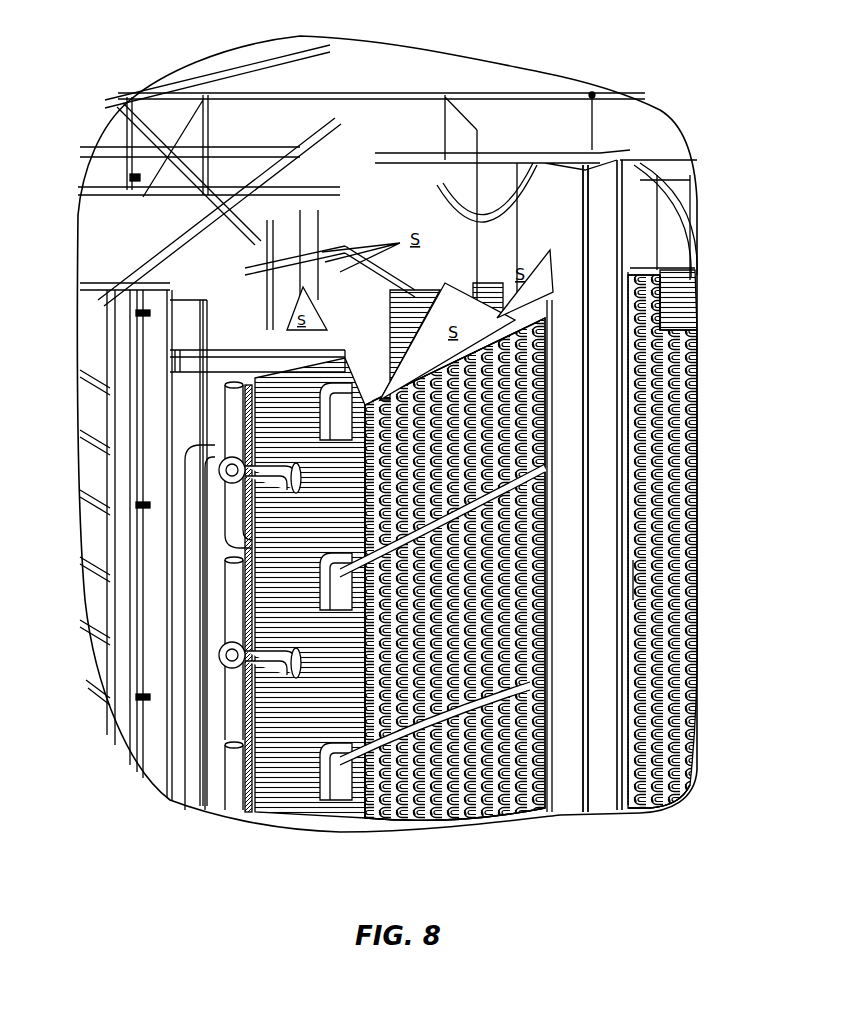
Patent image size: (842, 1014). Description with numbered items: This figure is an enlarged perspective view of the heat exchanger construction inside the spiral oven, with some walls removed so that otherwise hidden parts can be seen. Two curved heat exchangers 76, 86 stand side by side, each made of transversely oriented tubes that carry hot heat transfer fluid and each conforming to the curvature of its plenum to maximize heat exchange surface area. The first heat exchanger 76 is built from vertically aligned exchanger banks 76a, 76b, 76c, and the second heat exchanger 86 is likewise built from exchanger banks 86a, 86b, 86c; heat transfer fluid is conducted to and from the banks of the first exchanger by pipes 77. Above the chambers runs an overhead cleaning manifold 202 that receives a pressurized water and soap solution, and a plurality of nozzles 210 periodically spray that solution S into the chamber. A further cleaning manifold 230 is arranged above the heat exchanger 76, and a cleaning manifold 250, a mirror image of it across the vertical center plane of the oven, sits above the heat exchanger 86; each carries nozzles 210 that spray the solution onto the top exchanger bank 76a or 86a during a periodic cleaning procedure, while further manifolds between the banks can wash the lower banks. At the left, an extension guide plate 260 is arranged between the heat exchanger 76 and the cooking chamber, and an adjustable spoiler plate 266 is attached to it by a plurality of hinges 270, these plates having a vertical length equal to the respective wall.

The overhead cleaning manifold 202 is at (217, 101).
The nozzles 210 is at (137, 178).
The cleaning manifold 230 is at (505, 143).
The cleaning manifold 250 is at (668, 143).
The extension guide plate 260 is at (187, 380).
The adjustable spoiler plate 266 is at (123, 347).
The hinges 270 is at (140, 316).
The curved heat exchanger 76 is at (548, 600).
The top exchanger bank 76a is at (545, 402).
The exchanger bank 76b is at (553, 620).
The exchanger bank 76c is at (493, 826).
The pipes 77 is at (353, 770).
The curved heat exchanger 86 is at (672, 564).
The top exchanger bank 86a is at (677, 425).
The exchanger bank 86b is at (688, 632).
The exchanger bank 86c is at (658, 806).